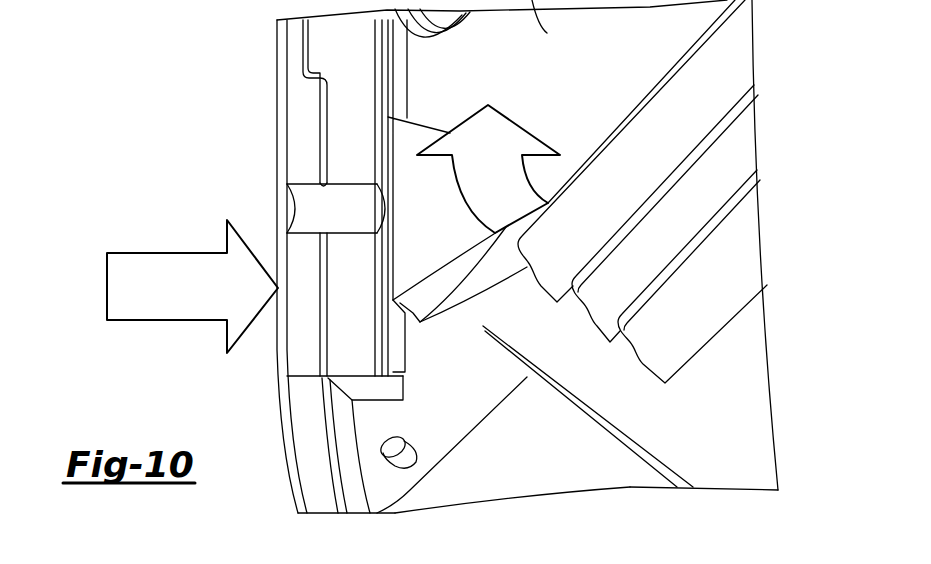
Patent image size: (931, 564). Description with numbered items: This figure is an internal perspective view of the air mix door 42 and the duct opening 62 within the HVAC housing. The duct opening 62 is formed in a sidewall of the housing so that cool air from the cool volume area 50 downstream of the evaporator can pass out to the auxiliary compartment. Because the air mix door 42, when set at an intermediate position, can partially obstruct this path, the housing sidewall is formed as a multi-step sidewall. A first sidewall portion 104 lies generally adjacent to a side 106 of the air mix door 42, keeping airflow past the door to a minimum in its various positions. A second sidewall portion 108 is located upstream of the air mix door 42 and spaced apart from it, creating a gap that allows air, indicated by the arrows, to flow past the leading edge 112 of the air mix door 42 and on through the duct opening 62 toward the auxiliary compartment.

The air mix door 42 is at (738, 441).
The cool volume area 50 is at (484, 493).
The duct opening 62 is at (408, 165).
The first sidewall portion 104 is at (594, 88).
The side of air mix door 106 is at (485, 318).
The second sidewall portion 108 is at (347, 357).
The leading edge 112 is at (590, 412).